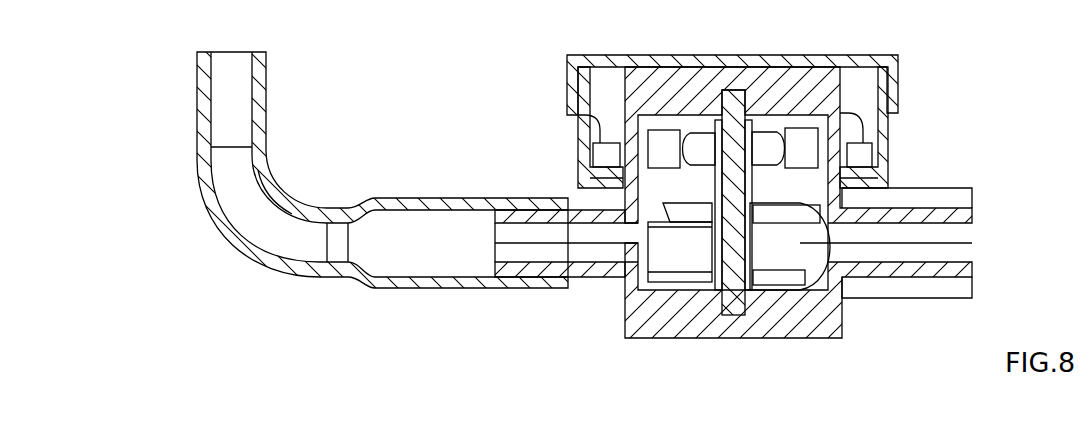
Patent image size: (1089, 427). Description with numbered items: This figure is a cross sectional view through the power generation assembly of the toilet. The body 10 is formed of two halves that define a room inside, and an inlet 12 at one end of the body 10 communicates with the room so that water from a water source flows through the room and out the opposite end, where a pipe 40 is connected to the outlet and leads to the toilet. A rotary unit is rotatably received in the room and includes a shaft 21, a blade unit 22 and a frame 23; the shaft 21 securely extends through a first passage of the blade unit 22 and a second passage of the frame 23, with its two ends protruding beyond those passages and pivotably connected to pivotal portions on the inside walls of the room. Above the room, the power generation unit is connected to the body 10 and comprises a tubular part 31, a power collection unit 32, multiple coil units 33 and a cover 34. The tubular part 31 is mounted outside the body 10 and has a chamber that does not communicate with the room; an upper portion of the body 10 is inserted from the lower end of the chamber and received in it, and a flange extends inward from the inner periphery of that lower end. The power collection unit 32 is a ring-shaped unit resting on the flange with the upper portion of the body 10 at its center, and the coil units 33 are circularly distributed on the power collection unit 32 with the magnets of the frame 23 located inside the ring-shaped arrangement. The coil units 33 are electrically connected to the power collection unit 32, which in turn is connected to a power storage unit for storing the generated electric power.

The body 10 is at (655, 370).
The inlet 12 is at (965, 262).
The shaft 21 is at (731, 303).
The blade unit 22 is at (785, 290).
The frame 23 is at (693, 140).
The tubular part 31 is at (890, 143).
The power collection unit 32 is at (600, 153).
The coil units 33 is at (613, 122).
The cover 34 is at (898, 72).
The pipe 40 is at (277, 261).